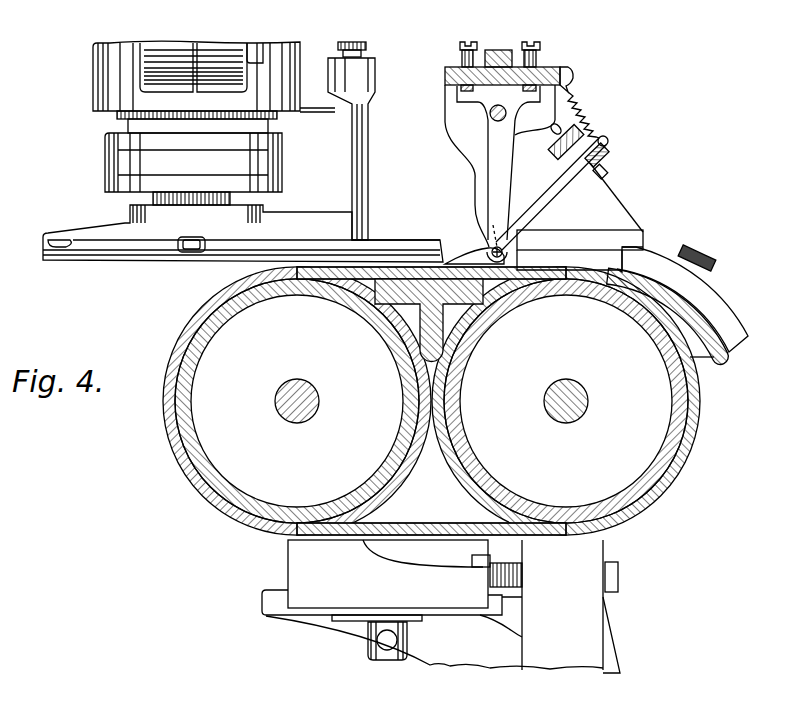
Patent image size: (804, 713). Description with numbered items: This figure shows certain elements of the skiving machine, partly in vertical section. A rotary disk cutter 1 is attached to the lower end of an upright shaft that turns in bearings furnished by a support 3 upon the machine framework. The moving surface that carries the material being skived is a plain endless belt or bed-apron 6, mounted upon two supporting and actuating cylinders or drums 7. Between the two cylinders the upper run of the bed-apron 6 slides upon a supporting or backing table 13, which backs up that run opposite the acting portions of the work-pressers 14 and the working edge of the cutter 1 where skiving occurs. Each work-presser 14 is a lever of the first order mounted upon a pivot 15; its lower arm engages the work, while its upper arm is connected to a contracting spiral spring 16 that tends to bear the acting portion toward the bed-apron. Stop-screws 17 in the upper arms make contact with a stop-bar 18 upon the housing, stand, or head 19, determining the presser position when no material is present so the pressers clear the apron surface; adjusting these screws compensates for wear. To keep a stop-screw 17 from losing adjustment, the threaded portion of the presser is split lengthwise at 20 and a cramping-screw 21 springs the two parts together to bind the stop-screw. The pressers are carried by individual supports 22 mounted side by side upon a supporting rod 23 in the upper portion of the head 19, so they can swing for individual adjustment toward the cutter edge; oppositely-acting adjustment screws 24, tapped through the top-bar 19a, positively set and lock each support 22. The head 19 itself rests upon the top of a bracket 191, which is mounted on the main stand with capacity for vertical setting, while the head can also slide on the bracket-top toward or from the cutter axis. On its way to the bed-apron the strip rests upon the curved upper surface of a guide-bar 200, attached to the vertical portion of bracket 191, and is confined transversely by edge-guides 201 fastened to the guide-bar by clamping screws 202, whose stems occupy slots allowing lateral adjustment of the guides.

The rotary disk cutter 1 is at (130, 262).
The support 3 is at (92, 70).
The endless belt or bed-apron 6 is at (428, 266).
The supporting and actuating cylinders or drums 7 is at (203, 361).
The supporting or backing table 13 is at (407, 300).
The work-pressers or presser-fingers 14 is at (461, 258).
The pivot 15 is at (503, 249).
The contracting spiral springs 16 is at (580, 112).
The stop-screws 17 is at (610, 178).
The stop-bar 18 is at (558, 141).
The housing, stand, or head 19 is at (453, 133).
The top-bar 19a is at (485, 50).
The split 20 is at (609, 143).
The cramping-screw 21 is at (608, 160).
The supports 22 is at (492, 174).
The supporting rod 23 is at (490, 114).
The adjustment screws 24 is at (461, 47).
The bracket 191 is at (598, 265).
The guide-bar 200 is at (726, 365).
The edge-guides 201 is at (720, 299).
The clamping screws 202 is at (711, 257).